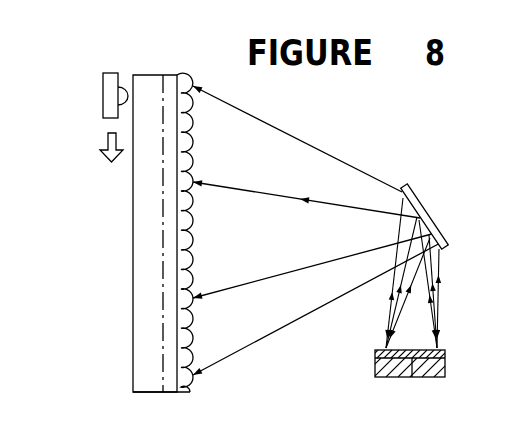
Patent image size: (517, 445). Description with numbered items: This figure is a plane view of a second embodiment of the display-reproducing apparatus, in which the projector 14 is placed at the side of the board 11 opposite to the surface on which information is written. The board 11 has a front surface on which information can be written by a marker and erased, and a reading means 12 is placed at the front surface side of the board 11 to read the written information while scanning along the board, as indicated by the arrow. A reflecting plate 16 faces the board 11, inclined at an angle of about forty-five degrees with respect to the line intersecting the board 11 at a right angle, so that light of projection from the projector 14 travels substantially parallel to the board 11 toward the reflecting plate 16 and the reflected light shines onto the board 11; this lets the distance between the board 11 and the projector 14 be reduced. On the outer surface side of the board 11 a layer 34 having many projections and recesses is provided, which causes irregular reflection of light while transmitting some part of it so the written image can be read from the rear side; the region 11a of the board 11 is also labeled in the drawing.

The board 11 is at (125, 226).
The screen substrate layer 11a is at (142, 313).
The reading means 12 is at (103, 88).
The projector 14 is at (413, 362).
The reflecting plate 16 is at (428, 216).
The layer having many projections and recesses 34 is at (188, 394).